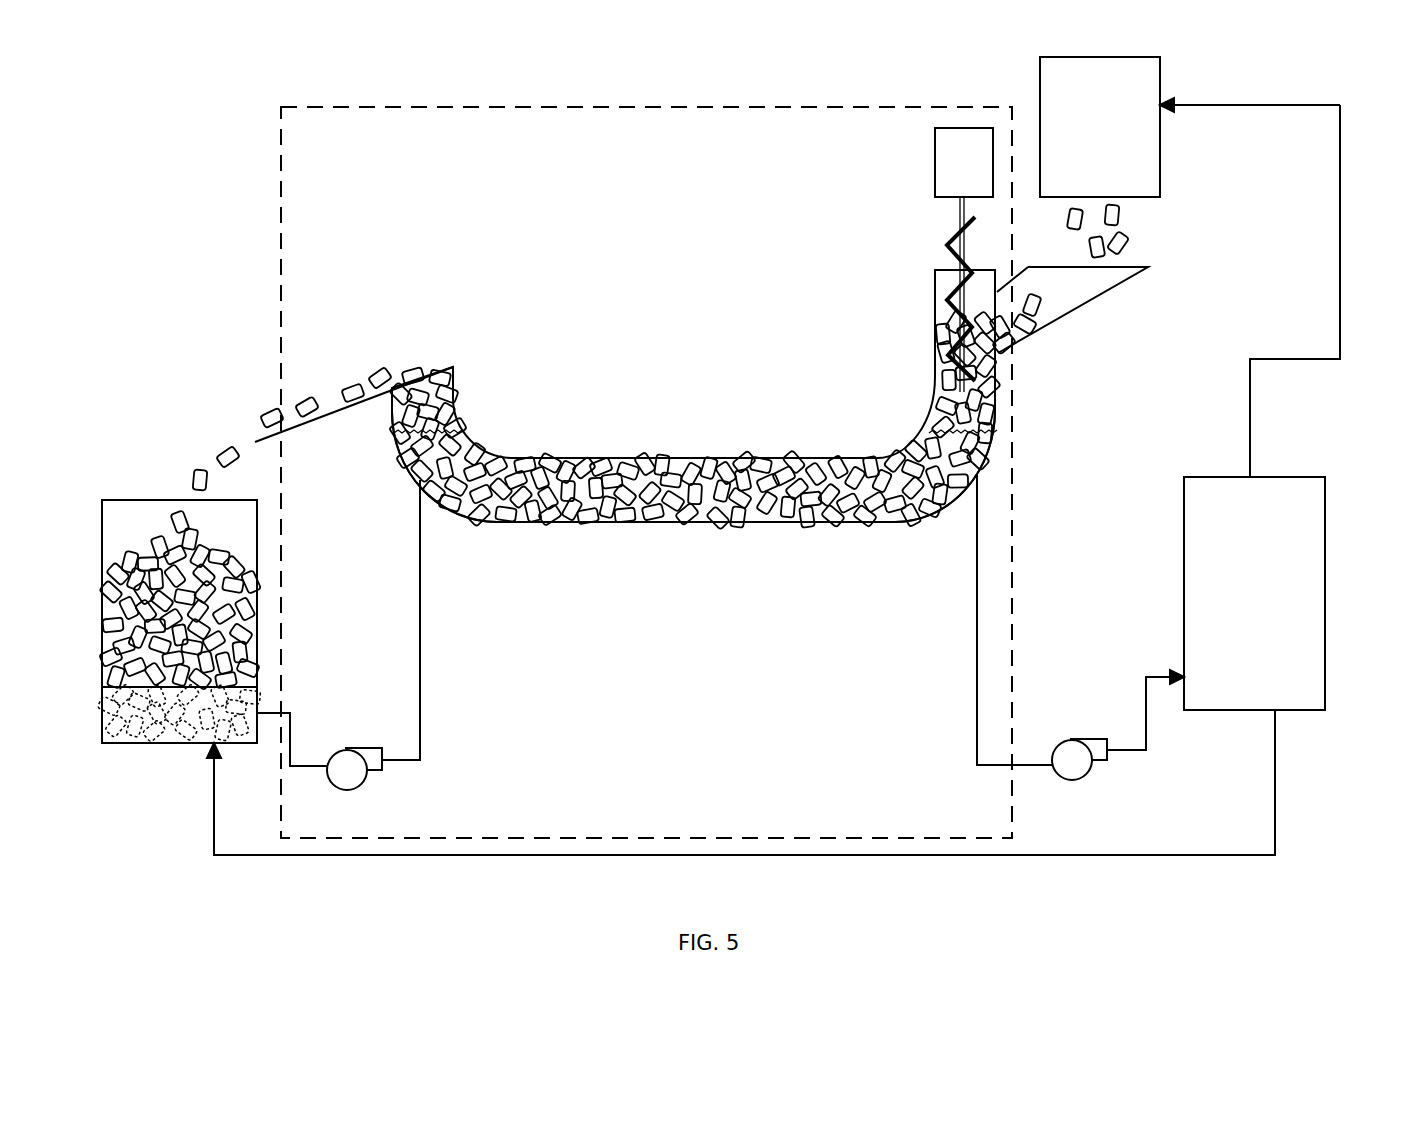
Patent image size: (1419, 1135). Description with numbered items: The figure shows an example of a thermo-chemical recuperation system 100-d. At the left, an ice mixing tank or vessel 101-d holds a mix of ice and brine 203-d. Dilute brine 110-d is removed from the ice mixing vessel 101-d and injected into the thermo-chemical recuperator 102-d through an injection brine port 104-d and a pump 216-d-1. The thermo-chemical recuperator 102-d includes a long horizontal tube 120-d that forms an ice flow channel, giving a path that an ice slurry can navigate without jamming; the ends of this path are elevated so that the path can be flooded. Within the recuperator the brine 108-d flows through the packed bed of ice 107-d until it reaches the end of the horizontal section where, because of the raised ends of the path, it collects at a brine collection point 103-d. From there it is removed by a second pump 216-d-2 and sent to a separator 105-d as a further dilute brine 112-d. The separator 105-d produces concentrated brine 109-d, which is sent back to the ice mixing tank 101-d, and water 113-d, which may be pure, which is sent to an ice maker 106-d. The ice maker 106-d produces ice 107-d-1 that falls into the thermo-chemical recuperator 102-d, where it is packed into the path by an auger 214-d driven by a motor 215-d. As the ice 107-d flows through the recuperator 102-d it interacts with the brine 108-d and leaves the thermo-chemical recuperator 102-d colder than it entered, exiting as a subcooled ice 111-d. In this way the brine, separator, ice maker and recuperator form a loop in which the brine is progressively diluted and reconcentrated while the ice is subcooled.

The thermo-chemical recuperation system 100-d is at (1316, 92).
The ice mixing tank 101-d is at (130, 500).
The thermo-chemical recuperator 102-d is at (831, 838).
The brine collection point 103-d is at (976, 478).
The injection brine port 104-d is at (418, 478).
The separator 105-d is at (1184, 494).
The ice maker 106-d is at (1040, 98).
The ice 107-d is at (810, 522).
The ice 107-d-1 is at (1120, 217).
The brine 108-d is at (705, 522).
The concentrated brine 109-d is at (570, 856).
The dilute brine 110-d is at (421, 640).
The subcooled ice 111-d is at (300, 400).
The further dilute brine 112-d is at (1148, 717).
The water 113-d is at (1340, 362).
The long horizontal tube 120-d is at (580, 522).
The mix of ice and brine 203-d is at (136, 730).
The auger 214-d is at (947, 235).
The motor 215-d is at (935, 144).
The pump 216-d-1 is at (357, 748).
The pump 216-d-2 is at (1083, 739).